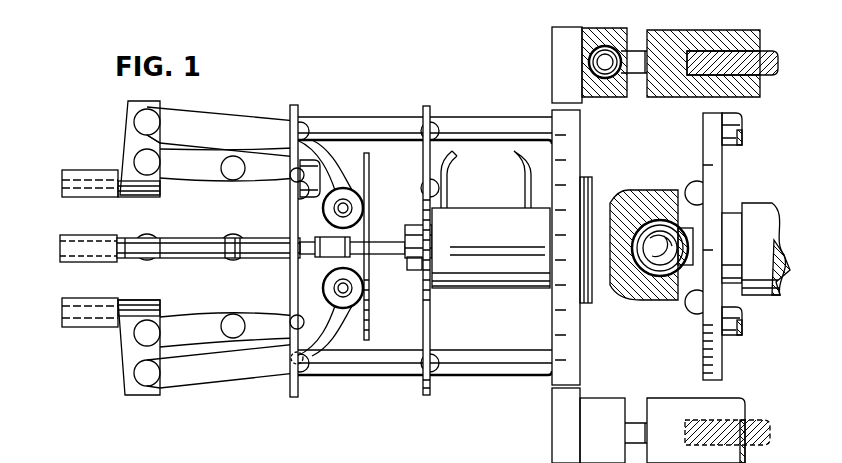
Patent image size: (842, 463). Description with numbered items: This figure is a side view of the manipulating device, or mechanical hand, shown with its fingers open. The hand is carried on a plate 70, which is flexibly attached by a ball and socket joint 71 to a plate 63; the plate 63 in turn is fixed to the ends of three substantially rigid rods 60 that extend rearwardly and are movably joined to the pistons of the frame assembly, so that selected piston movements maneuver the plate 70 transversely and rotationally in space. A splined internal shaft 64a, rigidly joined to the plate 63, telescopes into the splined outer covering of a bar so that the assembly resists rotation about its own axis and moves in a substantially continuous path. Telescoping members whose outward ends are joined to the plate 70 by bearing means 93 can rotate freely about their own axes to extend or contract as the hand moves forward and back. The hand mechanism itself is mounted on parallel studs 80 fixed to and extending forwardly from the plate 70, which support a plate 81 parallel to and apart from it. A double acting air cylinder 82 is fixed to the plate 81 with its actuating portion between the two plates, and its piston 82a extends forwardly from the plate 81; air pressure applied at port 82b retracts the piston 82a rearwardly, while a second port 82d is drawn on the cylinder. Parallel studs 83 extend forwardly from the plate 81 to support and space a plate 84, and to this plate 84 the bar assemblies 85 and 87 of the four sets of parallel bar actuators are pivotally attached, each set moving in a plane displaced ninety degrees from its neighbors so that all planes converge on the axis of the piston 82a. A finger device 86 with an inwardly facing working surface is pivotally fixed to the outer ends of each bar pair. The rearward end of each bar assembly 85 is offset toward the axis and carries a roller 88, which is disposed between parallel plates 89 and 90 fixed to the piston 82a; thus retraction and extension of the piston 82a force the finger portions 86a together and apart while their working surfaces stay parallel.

The rod 60 is at (742, 143).
The plate 63 is at (703, 156).
The splined internal shaft 64a is at (731, 212).
The plate 70 is at (552, 439).
The ball and socket joint 71 is at (652, 300).
The stud 80 is at (466, 118).
The plate 81 is at (432, 390).
The double acting air cylinder 82 is at (481, 292).
The piston 82a is at (402, 260).
The port 82b is at (448, 186).
The fluid pipe 82d is at (526, 190).
The stud 83 is at (318, 122).
The plate 84 is at (294, 396).
The bar assembly 85 is at (228, 115).
The finger device 86 is at (128, 152).
The finger portion 86a is at (62, 300).
The bar assembly 87 is at (193, 182).
The roller 88 is at (350, 194).
The plate 89 is at (324, 200).
The plate 90 is at (369, 204).
The bearing means 93 is at (610, 31).